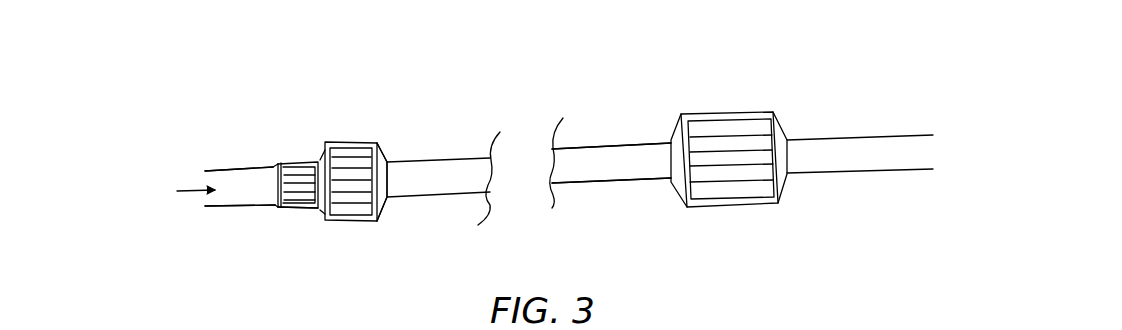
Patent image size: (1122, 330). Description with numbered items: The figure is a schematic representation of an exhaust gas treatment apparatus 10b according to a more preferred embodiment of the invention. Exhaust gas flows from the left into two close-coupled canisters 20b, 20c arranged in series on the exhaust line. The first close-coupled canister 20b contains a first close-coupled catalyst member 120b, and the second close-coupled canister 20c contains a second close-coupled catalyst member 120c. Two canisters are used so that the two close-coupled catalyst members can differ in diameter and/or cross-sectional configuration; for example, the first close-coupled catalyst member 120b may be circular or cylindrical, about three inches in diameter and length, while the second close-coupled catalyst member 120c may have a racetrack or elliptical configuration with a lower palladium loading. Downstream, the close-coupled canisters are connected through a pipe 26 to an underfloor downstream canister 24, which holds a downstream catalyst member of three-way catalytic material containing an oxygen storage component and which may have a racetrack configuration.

The exhaust gas treatment apparatus 10b is at (612, 218).
The first close-coupled canister 20b is at (297, 158).
The second close-coupled canister 20c is at (360, 137).
The underfloor downstream canister 24 is at (703, 103).
The pipe 26 is at (593, 148).
The first close-coupled catalyst member 120b is at (297, 223).
The second close-coupled catalyst member 120c is at (377, 228).